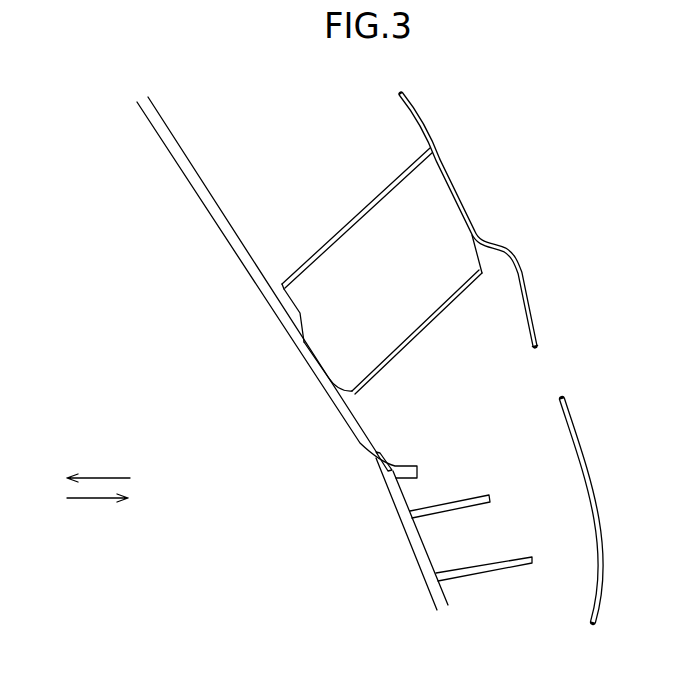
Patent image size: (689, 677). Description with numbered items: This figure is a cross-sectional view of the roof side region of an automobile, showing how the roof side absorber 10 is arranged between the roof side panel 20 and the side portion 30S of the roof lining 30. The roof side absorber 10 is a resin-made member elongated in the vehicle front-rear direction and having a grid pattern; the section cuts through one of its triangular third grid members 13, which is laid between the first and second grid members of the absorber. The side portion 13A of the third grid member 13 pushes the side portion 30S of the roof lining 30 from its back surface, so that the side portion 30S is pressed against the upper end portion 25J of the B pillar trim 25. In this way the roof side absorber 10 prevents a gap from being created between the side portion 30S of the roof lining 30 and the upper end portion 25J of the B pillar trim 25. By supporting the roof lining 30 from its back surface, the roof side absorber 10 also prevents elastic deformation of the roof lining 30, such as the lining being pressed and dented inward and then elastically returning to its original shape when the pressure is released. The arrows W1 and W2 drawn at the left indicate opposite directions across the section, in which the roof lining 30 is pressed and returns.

The roof side absorber 10 is at (338, 183).
The third grid member 13 is at (400, 290).
The side portion of third grid member 13A is at (312, 356).
The roof side panel 20 is at (462, 203).
The B pillar trim 25 is at (420, 548).
The upper end portion of B pillar trim 25J is at (384, 476).
The roof lining 30 is at (277, 287).
The side portion of roof lining 30S is at (348, 426).
The vehicle width direction outward W1 is at (116, 474).
The vehicle width direction inward W2 is at (116, 500).